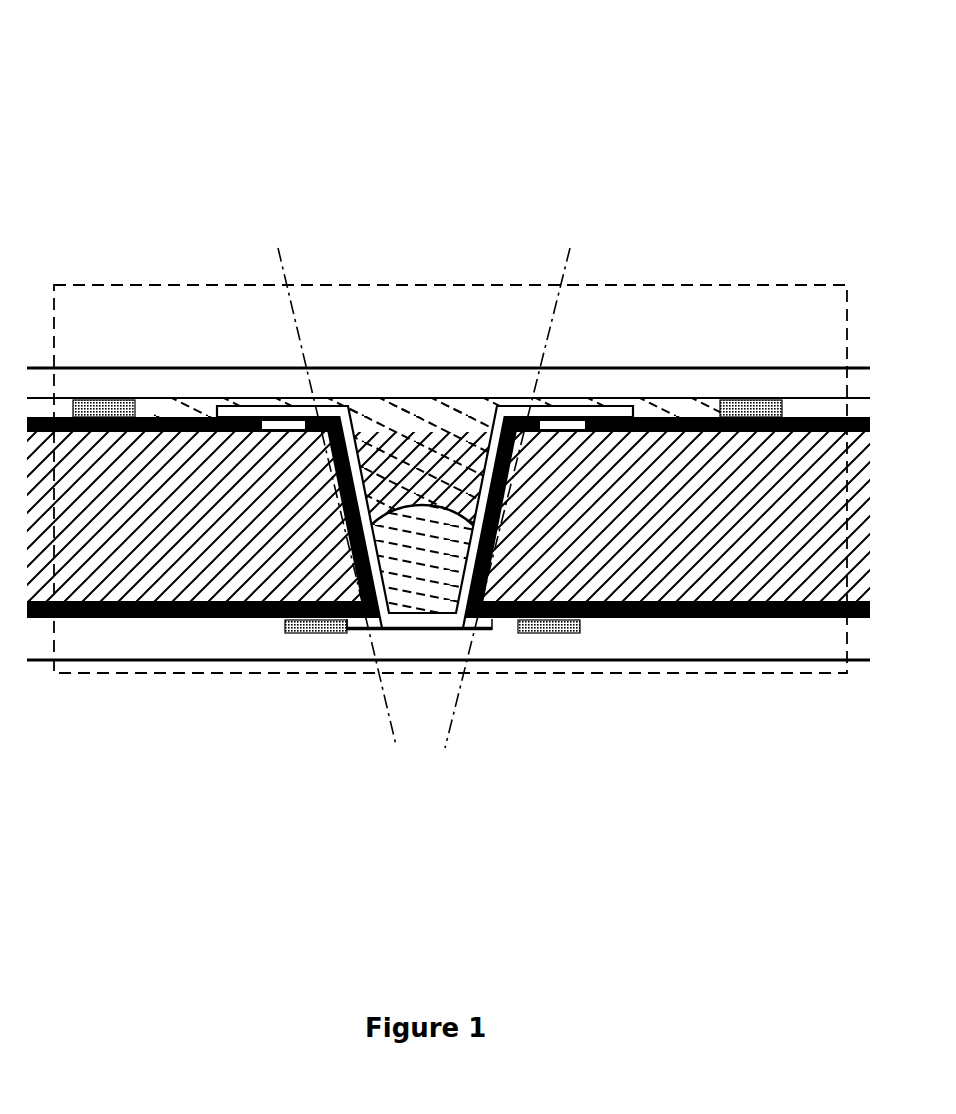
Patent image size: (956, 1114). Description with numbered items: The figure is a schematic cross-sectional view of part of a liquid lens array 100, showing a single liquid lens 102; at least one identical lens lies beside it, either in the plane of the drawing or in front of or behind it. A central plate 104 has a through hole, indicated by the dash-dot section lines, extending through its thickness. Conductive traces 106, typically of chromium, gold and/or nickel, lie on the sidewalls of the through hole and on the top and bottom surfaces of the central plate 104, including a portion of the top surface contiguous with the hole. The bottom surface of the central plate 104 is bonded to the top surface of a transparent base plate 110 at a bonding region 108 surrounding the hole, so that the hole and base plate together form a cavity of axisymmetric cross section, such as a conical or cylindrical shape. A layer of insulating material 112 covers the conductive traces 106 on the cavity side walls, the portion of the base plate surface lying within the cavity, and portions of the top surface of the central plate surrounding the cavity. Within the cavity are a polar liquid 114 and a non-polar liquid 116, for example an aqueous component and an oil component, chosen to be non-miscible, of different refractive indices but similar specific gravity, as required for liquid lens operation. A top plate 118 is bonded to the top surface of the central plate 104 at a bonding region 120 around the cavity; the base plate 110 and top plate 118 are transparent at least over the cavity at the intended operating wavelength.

The liquid lens array 100 is at (141, 123).
The liquid lens 102 is at (640, 290).
The central plate 104 is at (130, 563).
The conductive traces 106 is at (700, 433).
The bonding region 108 is at (313, 635).
The transparent base plate 110 is at (745, 650).
The layer of insulating material 112 is at (340, 410).
The polar liquid 114 is at (430, 412).
The non-polar liquid 116 is at (407, 592).
The top plate 118 is at (680, 383).
The bonding region 120 is at (110, 407).